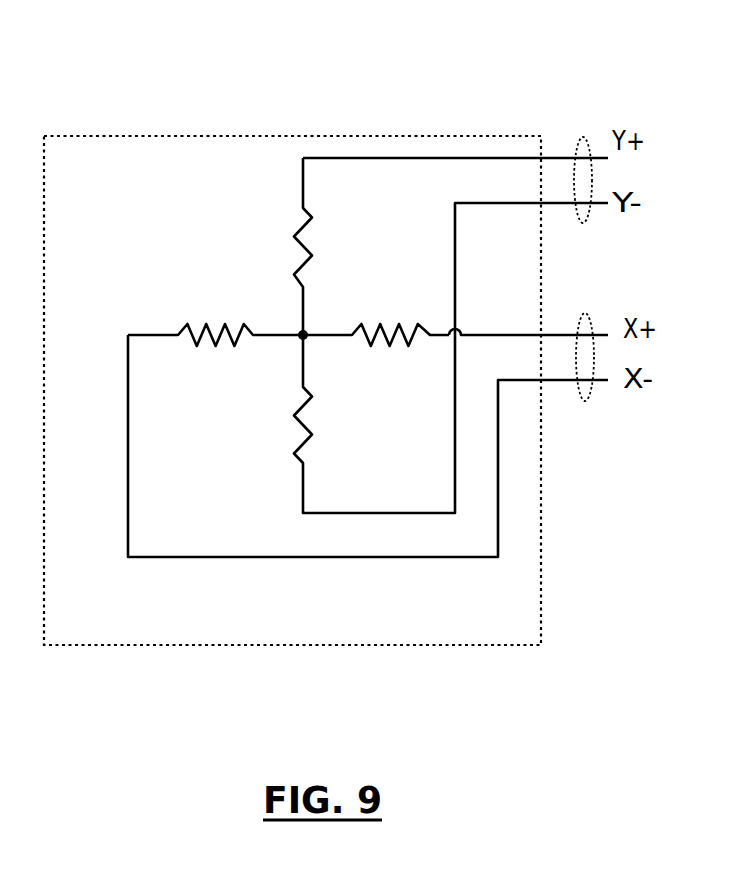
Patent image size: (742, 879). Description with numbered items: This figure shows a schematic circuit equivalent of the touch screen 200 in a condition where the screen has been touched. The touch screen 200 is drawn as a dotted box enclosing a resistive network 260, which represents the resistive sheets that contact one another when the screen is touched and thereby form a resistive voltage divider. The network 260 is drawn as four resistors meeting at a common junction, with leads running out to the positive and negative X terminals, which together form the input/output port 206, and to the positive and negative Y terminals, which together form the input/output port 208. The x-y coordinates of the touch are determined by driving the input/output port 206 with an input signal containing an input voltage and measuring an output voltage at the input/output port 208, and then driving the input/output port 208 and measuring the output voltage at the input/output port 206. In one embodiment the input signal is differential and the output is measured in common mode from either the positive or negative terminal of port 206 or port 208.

The touch screen 200 is at (152, 622).
The resistive network 260 is at (254, 261).
The input/output port 208 is at (598, 115).
The input/output port 206 is at (585, 401).